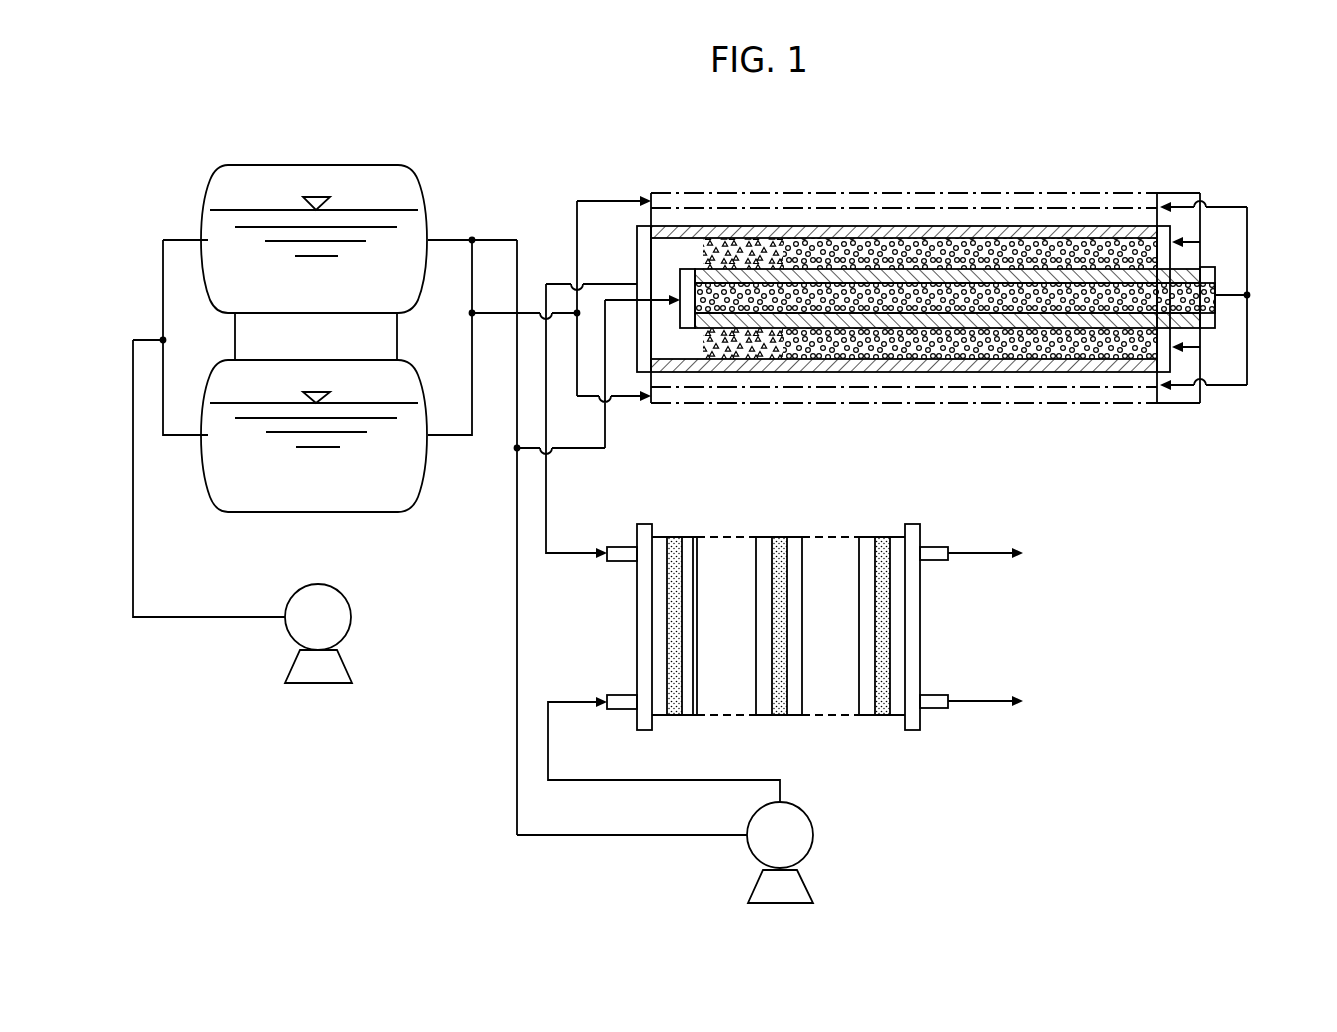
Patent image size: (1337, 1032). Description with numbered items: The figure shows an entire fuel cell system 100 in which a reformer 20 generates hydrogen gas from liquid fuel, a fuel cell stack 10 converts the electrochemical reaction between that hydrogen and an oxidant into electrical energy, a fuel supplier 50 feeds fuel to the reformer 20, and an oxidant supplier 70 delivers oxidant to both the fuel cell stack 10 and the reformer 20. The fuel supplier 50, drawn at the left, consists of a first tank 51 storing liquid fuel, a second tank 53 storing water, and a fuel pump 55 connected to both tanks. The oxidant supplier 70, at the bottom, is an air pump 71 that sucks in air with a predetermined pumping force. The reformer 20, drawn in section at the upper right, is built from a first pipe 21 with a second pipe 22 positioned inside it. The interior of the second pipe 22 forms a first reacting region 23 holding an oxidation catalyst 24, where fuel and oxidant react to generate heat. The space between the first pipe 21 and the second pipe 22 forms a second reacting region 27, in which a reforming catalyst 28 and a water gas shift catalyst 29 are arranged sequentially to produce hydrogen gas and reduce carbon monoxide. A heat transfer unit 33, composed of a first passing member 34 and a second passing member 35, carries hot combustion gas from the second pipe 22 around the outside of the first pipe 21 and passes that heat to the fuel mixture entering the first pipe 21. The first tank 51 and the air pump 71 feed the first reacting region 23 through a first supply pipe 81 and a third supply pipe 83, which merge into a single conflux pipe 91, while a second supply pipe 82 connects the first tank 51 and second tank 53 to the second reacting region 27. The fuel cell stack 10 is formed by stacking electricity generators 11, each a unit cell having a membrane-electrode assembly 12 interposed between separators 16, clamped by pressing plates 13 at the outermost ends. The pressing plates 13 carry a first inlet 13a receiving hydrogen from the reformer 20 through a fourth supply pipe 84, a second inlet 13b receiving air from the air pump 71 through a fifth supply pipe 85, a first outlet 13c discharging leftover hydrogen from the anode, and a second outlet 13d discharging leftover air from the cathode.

The fuel cell system 100 is at (1256, 617).
The fuel cell stack 10 is at (804, 604).
The electricity generator 11 is at (778, 582).
The membrane-electrode assembly 12 is at (778, 537).
The separators 16 is at (760, 537).
The pressing plates 13 is at (637, 627).
The first inlet 13a is at (622, 547).
The second inlet 13b is at (622, 709).
The first outlet 13c is at (936, 711).
The second outlet 13d is at (946, 547).
The reformer 20 is at (978, 264).
The first pipe 21 is at (731, 232).
The second pipe 22 is at (900, 240).
The first reacting region 23 is at (977, 267).
The oxidation catalyst 24 is at (937, 283).
The second reacting region 27 is at (820, 245).
The reforming catalyst 28 is at (800, 245).
The water gas shift catalyst 29 is at (753, 245).
The heat transfer unit 33 is at (1113, 186).
The first passing member 34 is at (1018, 217).
The second passing member 35 is at (1057, 198).
The fuel supplier 50 is at (205, 672).
The first tank 51 is at (318, 165).
The second tank 53 is at (320, 512).
The fuel pump 55 is at (352, 617).
The oxidant supplier 70 is at (821, 852).
The air pump 71 is at (813, 835).
The first supply pipe 81 is at (497, 240).
The second supply pipe 82 is at (494, 317).
The third supply pipe 83 is at (517, 645).
The fourth supply pipe 84 is at (546, 508).
The fifth supply pipe 85 is at (688, 780).
The conflux pipe 91 is at (583, 450).